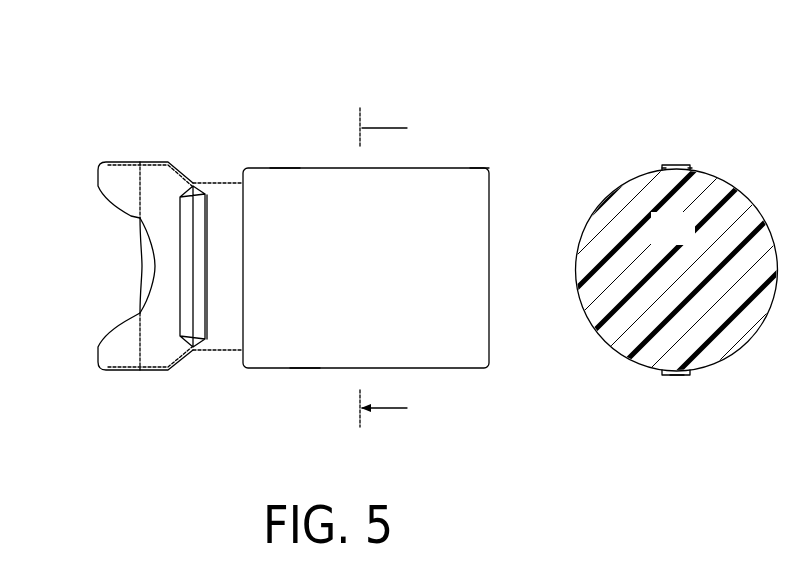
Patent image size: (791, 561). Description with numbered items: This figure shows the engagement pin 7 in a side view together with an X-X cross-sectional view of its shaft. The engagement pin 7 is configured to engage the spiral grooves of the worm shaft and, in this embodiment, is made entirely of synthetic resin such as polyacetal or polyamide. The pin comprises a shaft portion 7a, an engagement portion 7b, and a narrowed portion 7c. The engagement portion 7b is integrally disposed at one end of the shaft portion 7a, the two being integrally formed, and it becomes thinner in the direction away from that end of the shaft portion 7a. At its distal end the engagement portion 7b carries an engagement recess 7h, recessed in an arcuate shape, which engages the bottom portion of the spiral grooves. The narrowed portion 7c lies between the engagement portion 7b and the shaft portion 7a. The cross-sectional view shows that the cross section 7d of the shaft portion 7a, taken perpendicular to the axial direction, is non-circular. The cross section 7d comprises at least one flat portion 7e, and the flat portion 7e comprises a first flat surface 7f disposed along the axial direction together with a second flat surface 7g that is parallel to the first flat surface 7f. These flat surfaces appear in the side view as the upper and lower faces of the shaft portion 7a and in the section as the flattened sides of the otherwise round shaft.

The engagement pin 7 is at (409, 246).
The shaft portion 7a is at (505, 194).
The engagement portion 7b is at (155, 146).
The narrowed portion 7c is at (218, 183).
The cross section 7d is at (691, 244).
The flat portion 7e is at (474, 160).
The first flat surface 7f is at (287, 167).
The second flat surface 7g is at (303, 368).
The engagement recess 7h is at (137, 243).